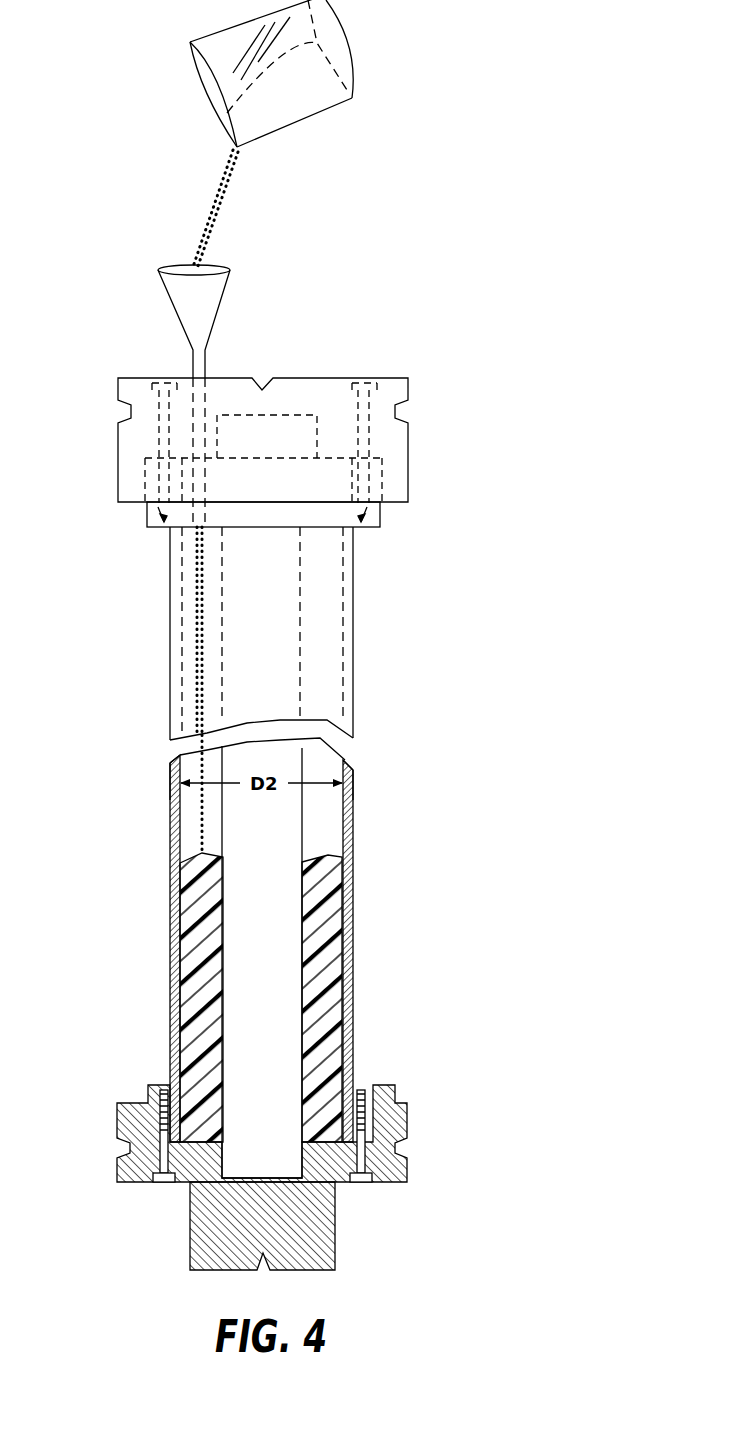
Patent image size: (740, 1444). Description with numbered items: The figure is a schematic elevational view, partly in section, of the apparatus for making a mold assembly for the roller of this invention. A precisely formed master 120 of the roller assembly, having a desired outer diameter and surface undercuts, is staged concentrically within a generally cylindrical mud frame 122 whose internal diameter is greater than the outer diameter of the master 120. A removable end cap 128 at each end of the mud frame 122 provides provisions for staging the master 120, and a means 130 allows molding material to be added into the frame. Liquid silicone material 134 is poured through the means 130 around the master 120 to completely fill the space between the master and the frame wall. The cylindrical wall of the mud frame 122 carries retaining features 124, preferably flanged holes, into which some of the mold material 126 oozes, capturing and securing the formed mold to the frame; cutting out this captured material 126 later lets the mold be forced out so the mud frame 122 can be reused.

The master 120 is at (272, 644).
The mud frame 122 is at (168, 608).
The retaining features 124 is at (348, 817).
The mold material 126 is at (173, 920).
The removable end cap 128 is at (400, 458).
The means for adding molding material 130 is at (213, 400).
The liquid silicone material 134 is at (210, 210).